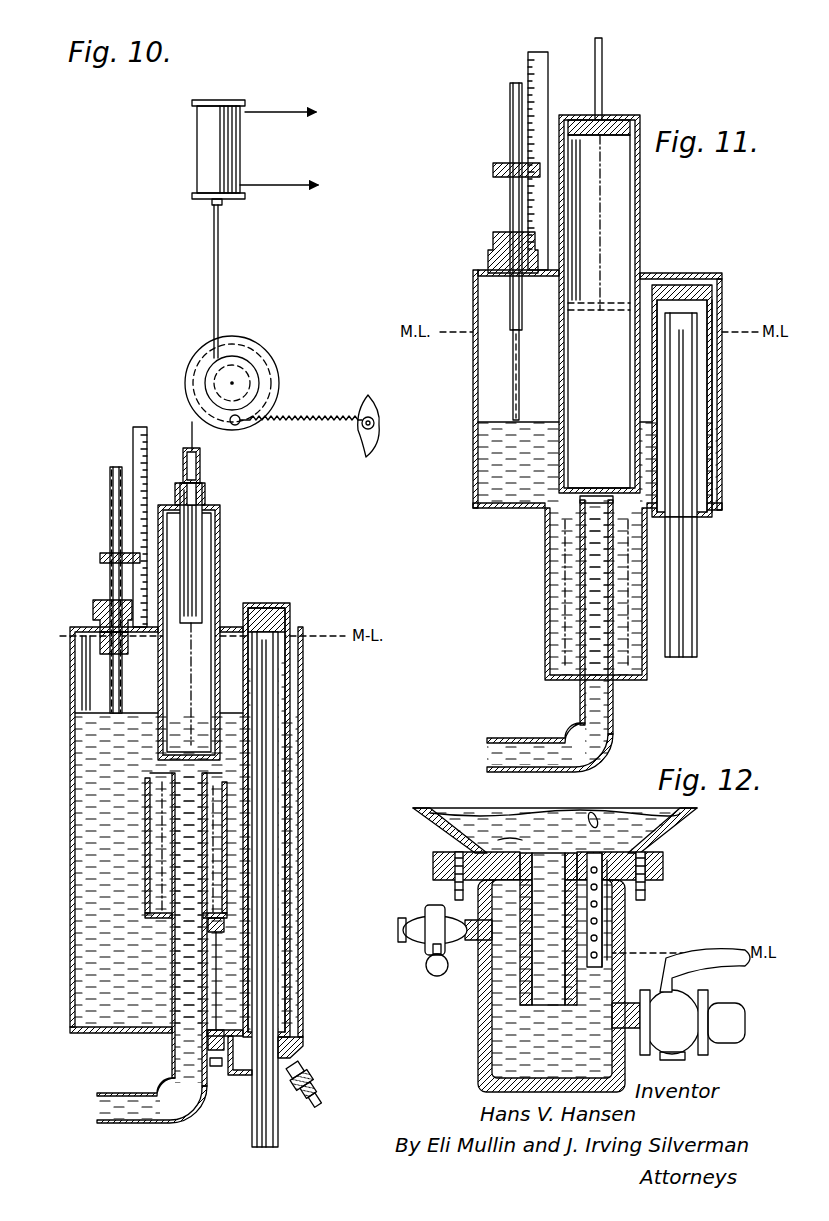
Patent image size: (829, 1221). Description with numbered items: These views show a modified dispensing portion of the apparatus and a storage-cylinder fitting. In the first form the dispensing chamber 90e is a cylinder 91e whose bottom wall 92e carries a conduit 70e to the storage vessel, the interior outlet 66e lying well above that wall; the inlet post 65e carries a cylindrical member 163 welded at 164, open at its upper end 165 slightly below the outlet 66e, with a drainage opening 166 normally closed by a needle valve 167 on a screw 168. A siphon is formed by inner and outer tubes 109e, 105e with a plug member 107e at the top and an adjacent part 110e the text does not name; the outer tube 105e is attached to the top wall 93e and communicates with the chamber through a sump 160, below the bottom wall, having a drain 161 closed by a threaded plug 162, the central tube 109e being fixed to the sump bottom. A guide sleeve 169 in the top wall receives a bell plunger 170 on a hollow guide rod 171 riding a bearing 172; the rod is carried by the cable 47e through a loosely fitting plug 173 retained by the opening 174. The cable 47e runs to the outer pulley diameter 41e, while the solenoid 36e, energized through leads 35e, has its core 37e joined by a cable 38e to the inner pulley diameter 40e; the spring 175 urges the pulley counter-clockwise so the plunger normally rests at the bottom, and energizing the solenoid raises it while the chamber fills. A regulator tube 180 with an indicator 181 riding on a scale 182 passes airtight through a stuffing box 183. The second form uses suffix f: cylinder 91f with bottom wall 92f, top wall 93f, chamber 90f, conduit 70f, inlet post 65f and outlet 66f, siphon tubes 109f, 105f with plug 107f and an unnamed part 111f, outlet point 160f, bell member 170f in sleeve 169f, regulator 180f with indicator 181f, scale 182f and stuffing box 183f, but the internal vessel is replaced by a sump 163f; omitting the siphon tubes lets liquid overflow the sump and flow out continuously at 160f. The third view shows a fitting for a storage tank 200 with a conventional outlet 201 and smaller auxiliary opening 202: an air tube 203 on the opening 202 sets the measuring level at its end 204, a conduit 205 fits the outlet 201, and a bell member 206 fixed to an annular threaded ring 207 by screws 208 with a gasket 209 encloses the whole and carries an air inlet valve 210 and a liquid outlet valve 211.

In FIG. 10, the solenoid 36e is at (197, 160).
In FIG. 10, the leads 35e is at (300, 116).
In FIG. 10, the core 37e is at (237, 201).
In FIG. 10, the cable 38e is at (218, 298).
In FIG. 10, the outer pulley diameter 41e is at (262, 346).
In FIG. 10, the inner pulley diameter 40e is at (256, 382).
In FIG. 10, the cable 47e is at (192, 421).
In FIG. 10, the spring 175 is at (339, 432).
In FIG. 10, the scale 182 is at (148, 472).
In FIG. 10, the measuring or regulator tube 180 is at (110, 500).
In FIG. 10, the indicator 181 is at (100, 556).
In FIG. 10, the stuffing box 183 is at (92, 604).
In FIG. 10, the top wall 93e is at (112, 648).
In FIG. 10, the opening 174 is at (196, 441).
In FIG. 10, the plug 173 is at (203, 462).
In FIG. 10, the bearing 172 is at (210, 487).
In FIG. 10, the guide rod 171 is at (202, 532).
In FIG. 10, the guide sleeve 169 is at (222, 566).
In FIG. 10, the bell plunger 170 is at (207, 606).
In FIG. 10, the plug member 107e is at (270, 604).
In FIG. 10, the cap 110e is at (290, 625).
In FIG. 10, the outer tube 105e is at (290, 822).
In FIG. 10, the inner tube 109e is at (278, 872).
In FIG. 10, the dispensing chamber 90e is at (303, 680).
In FIG. 10, the cylinder 91e is at (303, 725).
In FIG. 10, the bottom wall 92e is at (101, 1033).
In FIG. 10, the interior outlet 66e is at (130, 776).
In FIG. 10, the open upper end 165 is at (147, 802).
In FIG. 10, the weld 164 is at (143, 920).
In FIG. 10, the cylindrical member 163 is at (145, 848).
In FIG. 10, the inlet post 65e is at (170, 940).
In FIG. 10, the conduit 70e is at (122, 1124).
In FIG. 10, the drainage opening 166 is at (226, 906).
In FIG. 10, the needle valve 167 is at (222, 985).
In FIG. 10, the screw 168 is at (212, 1068).
In FIG. 10, the sump 160 is at (236, 1062).
In FIG. 10, the drain 161 is at (302, 1082).
In FIG. 10, the threaded plug 162 is at (320, 1106).
In FIG. 11, the scale 182f is at (548, 65).
In FIG. 11, the regulator tube 180f is at (510, 143).
In FIG. 11, the indicator 181f is at (493, 171).
In FIG. 11, the stuffing box 183f is at (487, 240).
In FIG. 11, the guide sleeve 169f is at (640, 213).
In FIG. 11, the bell member 170f is at (625, 253).
In FIG. 11, the top wall 93f is at (690, 275).
In FIG. 11, the dispensing chamber 90f is at (472, 372).
In FIG. 11, the cylinder 91f is at (473, 446).
In FIG. 11, the bottom wall 92f is at (478, 508).
In FIG. 11, the plug member 107f is at (712, 293).
In FIG. 11, the outer siphon tube 105f is at (712, 313).
In FIG. 11, the outer wall 111f is at (722, 396).
In FIG. 11, the inner siphon tube 109f is at (700, 379).
In FIG. 11, the outlet point 160f is at (697, 513).
In FIG. 11, the sump 163f is at (545, 640).
In FIG. 11, the outlet 66f is at (583, 503).
In FIG. 11, the inlet post 65f is at (582, 594).
In FIG. 11, the conduit 70f is at (525, 738).
In FIG. 12, the storage tank 200 is at (696, 812).
In FIG. 12, the conventional outlet 201 is at (511, 843).
In FIG. 12, the auxiliary opening 202 is at (618, 805).
In FIG. 12, the annular threaded ring 207 is at (433, 861).
In FIG. 12, the screws 208 is at (459, 905).
In FIG. 12, the gasket 209 is at (663, 871).
In FIG. 12, the air tube 203 is at (603, 921).
In FIG. 12, the end of air tube 204 is at (602, 951).
In FIG. 12, the conduit 205 is at (520, 986).
In FIG. 12, the bell member 206 is at (478, 1056).
In FIG. 12, the air inlet valve 210 is at (428, 946).
In FIG. 12, the liquid outlet valve 211 is at (700, 1006).